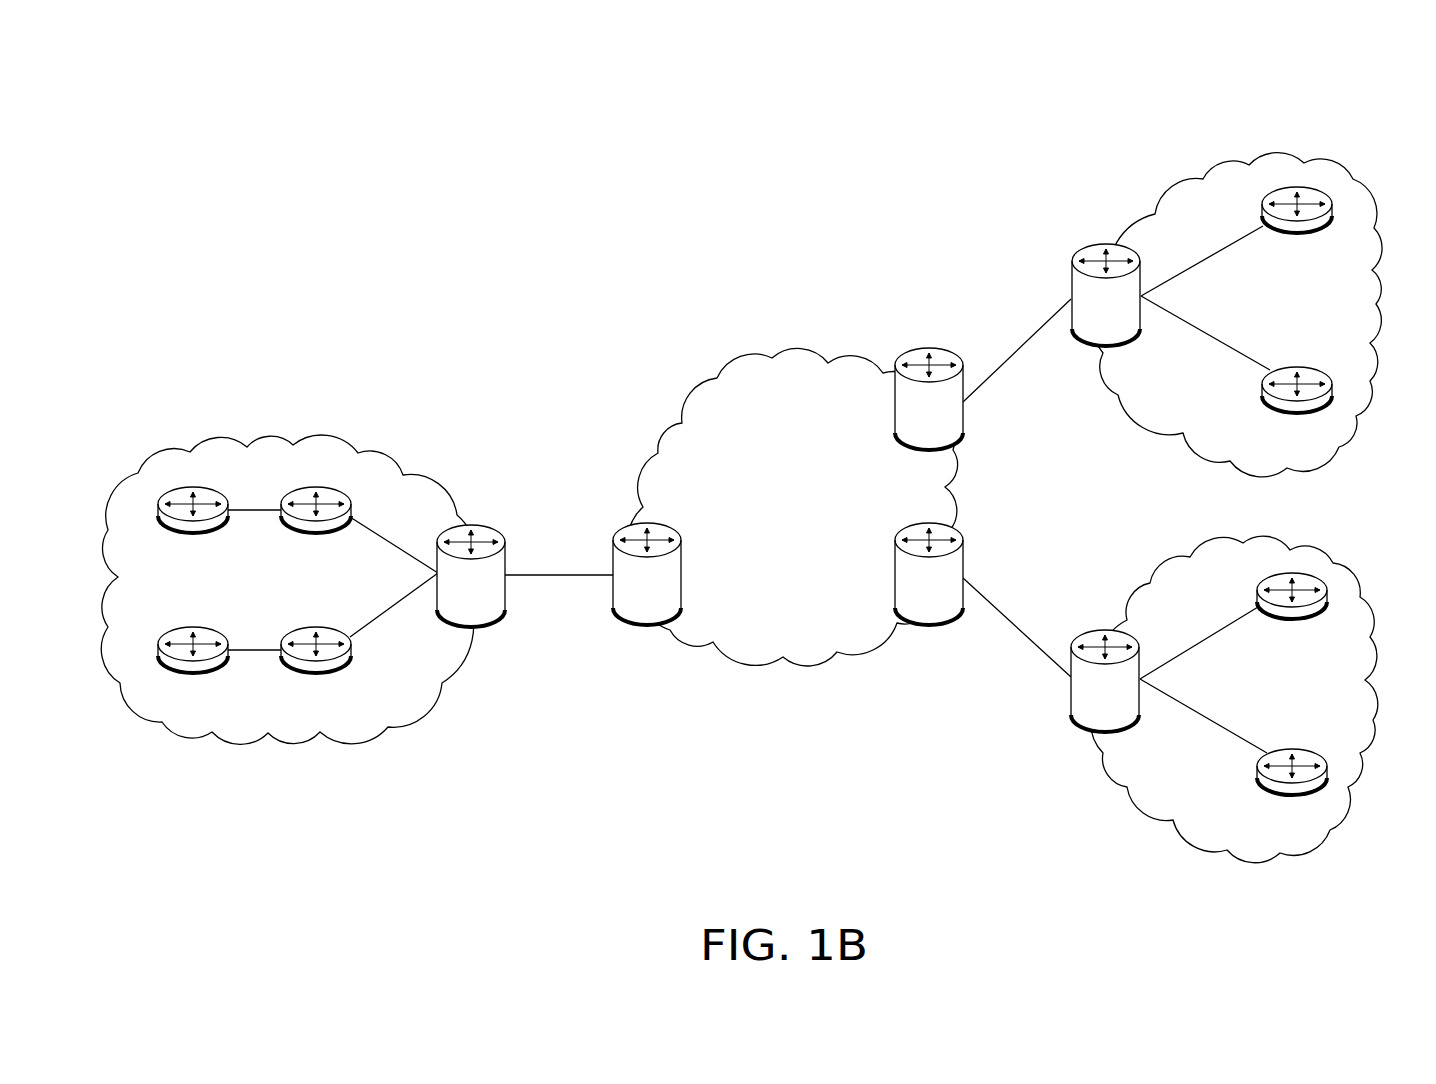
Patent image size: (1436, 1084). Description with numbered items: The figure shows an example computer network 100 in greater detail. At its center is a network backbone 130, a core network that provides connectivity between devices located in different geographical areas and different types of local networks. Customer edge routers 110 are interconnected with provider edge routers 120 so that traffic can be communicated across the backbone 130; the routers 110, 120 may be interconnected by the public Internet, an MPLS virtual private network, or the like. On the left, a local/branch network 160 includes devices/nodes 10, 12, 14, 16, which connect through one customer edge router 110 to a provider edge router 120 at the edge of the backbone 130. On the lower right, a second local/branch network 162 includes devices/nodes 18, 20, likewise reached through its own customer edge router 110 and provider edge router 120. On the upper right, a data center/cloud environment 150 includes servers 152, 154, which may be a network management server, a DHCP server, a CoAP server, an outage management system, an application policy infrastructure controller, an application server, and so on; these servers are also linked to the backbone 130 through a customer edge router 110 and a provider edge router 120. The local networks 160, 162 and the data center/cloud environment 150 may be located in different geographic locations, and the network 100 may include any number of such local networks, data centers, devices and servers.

The computer network 100 is at (1330, 94).
The device/node 10 is at (193, 526).
The device/node 12 is at (316, 526).
The device/node 14 is at (193, 666).
The device/node 16 is at (316, 666).
The device/node 18 is at (1292, 790).
The device/node 20 is at (1292, 614).
The customer edge router 110 is at (489, 611).
The provider edge router 120 is at (664, 611).
The network backbone 130 is at (814, 533).
The data center/cloud environment 150 is at (1203, 172).
The server 152 is at (1297, 228).
The server 154 is at (1297, 407).
The local/branch network 160 is at (332, 434).
The local/branch network 162 is at (1122, 775).